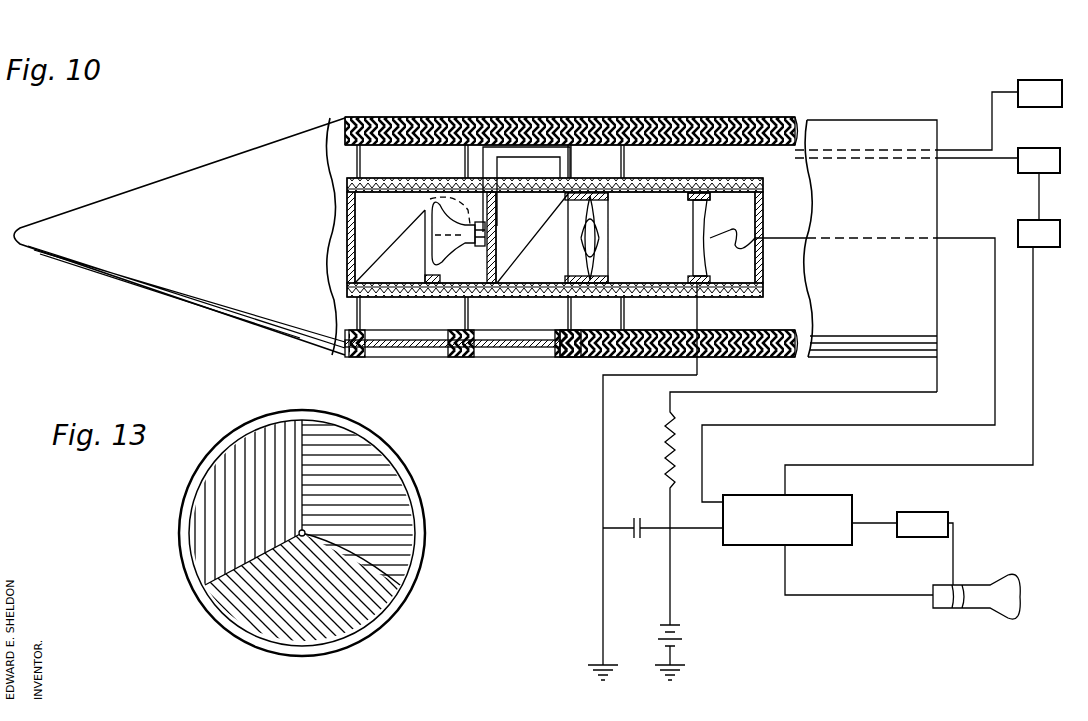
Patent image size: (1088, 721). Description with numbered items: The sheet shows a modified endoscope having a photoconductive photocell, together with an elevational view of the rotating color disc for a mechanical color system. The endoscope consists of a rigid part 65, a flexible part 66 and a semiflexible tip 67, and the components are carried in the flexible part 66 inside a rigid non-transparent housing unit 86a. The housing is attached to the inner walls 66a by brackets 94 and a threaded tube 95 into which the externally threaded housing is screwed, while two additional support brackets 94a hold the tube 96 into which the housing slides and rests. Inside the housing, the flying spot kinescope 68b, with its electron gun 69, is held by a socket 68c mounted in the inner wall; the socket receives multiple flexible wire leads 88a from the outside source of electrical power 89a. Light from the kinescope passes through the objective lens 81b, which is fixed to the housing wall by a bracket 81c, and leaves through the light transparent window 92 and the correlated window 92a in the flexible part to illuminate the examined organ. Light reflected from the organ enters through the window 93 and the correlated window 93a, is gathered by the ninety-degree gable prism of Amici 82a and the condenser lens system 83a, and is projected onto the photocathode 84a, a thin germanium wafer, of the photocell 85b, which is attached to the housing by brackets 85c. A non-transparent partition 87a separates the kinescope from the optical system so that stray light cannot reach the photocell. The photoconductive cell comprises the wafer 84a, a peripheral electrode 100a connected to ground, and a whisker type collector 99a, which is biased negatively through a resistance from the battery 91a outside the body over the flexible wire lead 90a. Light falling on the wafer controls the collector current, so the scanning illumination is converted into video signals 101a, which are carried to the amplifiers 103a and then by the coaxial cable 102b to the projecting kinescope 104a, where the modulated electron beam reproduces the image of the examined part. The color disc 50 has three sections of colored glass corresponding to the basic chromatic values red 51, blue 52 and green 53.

In FIG. 10, the semiflexible tip 67 is at (205, 170).
In FIG. 10, the flexible part 66 is at (532, 118).
In FIG. 10, the inner walls 66a is at (498, 132).
In FIG. 10, the rigid part 65 is at (863, 120).
In FIG. 10, the brackets 94 is at (356, 162).
In FIG. 10, the additional support brackets 94a is at (640, 135).
In FIG. 10, the threaded tube 95 is at (348, 203).
In FIG. 10, the objective lens 81b is at (400, 243).
In FIG. 10, the bracket 81c is at (432, 290).
In FIG. 10, the kinescope 68b is at (445, 250).
In FIG. 10, the socket 68c is at (510, 188).
In FIG. 10, the electron gun 69 is at (435, 200).
In FIG. 10, the prism 82a is at (540, 232).
In FIG. 10, the non-transparent partition 87a is at (518, 262).
In FIG. 10, the condenser lens system 83a is at (600, 226).
In FIG. 10, the photocathode 84a is at (695, 193).
In FIG. 10, the photocell 85b is at (712, 193).
In FIG. 10, the brackets 85c is at (712, 278).
In FIG. 10, the housing unit 86a is at (665, 298).
In FIG. 10, the tube 96 is at (591, 168).
In FIG. 10, the collector 99a is at (740, 228).
In FIG. 10, the peripheral electrode 100a is at (705, 290).
In FIG. 10, the light transparent window 92 is at (372, 296).
In FIG. 10, the window 92a is at (405, 352).
In FIG. 10, the light transparent window 93 is at (510, 298).
In FIG. 10, the window 93a is at (503, 352).
In FIG. 10, the flexible wire leads 88a is at (855, 158).
In FIG. 10, the source of electrical power 89a is at (1030, 87).
In FIG. 10, the flexible wire lead 90a is at (845, 238).
In FIG. 10, the source of electrical power 91a is at (677, 627).
In FIG. 10, the video signals 101a is at (1020, 235).
In FIG. 10, the coaxial cable 102b is at (995, 330).
In FIG. 10, the amplifiers 103a is at (838, 500).
In FIG. 10, the projecting kinescope 104a is at (1018, 612).
In FIG. 13, the disc 50 is at (398, 452).
In FIG. 13, the red section 51 is at (215, 481).
In FIG. 13, the blue section 52 is at (390, 492).
In FIG. 13, the green section 53 is at (300, 628).